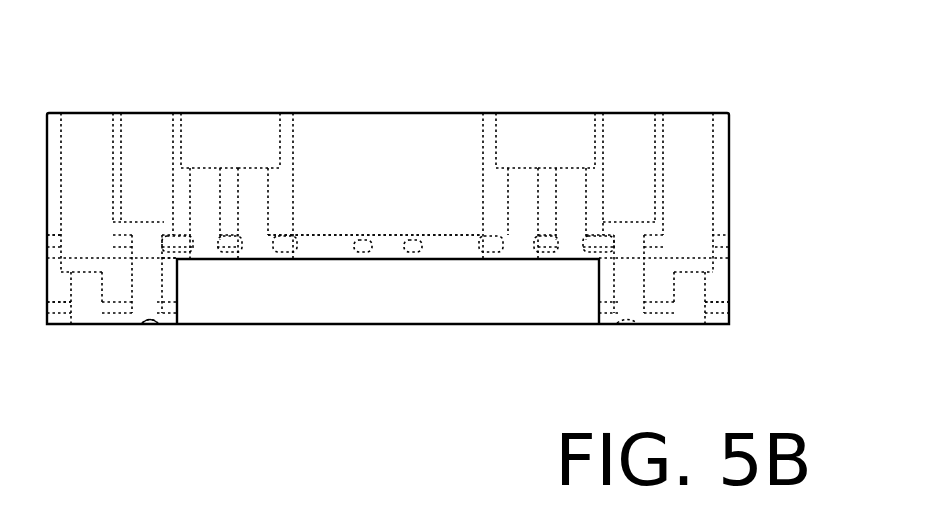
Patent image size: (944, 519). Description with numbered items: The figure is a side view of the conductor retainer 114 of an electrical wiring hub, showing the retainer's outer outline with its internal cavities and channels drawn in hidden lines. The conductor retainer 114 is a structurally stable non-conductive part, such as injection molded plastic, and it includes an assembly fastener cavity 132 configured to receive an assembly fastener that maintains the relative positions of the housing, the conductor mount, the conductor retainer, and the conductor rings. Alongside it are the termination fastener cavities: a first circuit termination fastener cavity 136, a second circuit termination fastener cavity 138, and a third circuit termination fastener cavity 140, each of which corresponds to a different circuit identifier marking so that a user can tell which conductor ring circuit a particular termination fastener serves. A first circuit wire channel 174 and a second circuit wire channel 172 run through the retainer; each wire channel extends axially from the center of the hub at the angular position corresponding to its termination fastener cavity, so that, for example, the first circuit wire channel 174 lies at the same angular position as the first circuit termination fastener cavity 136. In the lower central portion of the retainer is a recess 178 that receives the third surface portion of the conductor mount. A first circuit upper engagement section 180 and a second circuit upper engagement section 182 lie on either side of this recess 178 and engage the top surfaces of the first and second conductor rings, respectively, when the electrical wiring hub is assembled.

The conductor retainer 114 is at (729, 140).
The assembly fastener cavity 132 is at (513, 120).
The first circuit termination fastener cavity 136 is at (569, 120).
The second circuit termination fastener cavity 138 is at (153, 125).
The third circuit termination fastener cavity 140 is at (82, 125).
The second circuit wire channel 172 is at (729, 302).
The first circuit wire channel 174 is at (729, 242).
The recess 178 is at (540, 313).
The first circuit upper engagement section 180 is at (203, 258).
The second circuit upper engagement section 182 is at (145, 323).